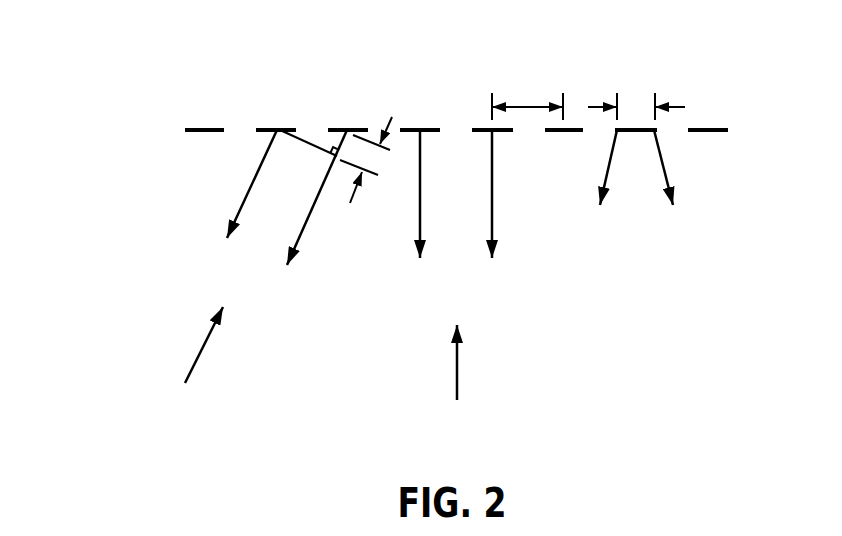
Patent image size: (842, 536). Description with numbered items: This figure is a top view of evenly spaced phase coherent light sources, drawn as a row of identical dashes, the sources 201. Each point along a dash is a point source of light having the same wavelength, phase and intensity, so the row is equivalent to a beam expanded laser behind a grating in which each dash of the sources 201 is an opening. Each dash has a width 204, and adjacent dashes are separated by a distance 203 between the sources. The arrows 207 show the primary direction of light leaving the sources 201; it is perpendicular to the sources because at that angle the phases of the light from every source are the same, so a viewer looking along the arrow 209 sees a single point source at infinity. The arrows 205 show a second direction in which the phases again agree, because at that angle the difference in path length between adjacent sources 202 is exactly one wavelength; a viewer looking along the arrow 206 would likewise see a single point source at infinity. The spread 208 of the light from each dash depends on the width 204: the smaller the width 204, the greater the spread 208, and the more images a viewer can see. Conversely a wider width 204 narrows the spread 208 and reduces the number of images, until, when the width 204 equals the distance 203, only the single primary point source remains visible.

The correlated parallel monochromatic light sources 201 is at (205, 127).
The path length difference between adjacent sources 202 is at (387, 128).
The distance between the sources 203 is at (525, 102).
The width of the source 204 is at (592, 106).
The arrows showing secondary direction of light 205 is at (300, 236).
The viewer direction arrow 206 is at (208, 338).
The arrows showing primary direction of light 207 is at (490, 225).
The spread of the light 208 is at (607, 177).
The viewer direction arrow 209 is at (457, 360).